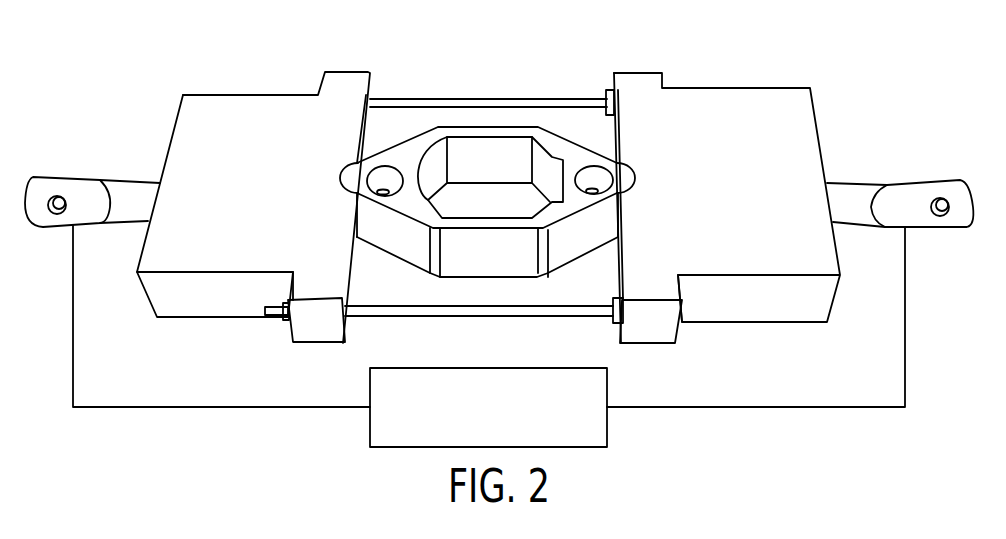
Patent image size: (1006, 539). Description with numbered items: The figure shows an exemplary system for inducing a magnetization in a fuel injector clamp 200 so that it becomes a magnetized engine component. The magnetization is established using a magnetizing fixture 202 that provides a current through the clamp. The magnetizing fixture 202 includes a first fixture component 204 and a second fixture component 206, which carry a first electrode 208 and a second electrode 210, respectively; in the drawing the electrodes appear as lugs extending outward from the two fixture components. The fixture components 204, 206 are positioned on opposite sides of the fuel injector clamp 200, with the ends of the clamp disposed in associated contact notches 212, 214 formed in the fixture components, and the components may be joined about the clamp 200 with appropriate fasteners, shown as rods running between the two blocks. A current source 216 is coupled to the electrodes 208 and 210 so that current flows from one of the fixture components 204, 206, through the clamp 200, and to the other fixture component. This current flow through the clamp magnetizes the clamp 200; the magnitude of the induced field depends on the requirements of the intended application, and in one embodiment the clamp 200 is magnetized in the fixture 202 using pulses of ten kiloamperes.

The fuel injector clamp 200 is at (493, 132).
The magnetizing fixture 202 is at (834, 58).
The first fixture component 204 is at (262, 102).
The second fixture component 206 is at (713, 100).
The first electrode 208 is at (120, 193).
The second electrode 210 is at (870, 187).
The contact notch 212 is at (340, 178).
The contact notch 214 is at (637, 180).
The current source 216 is at (370, 392).